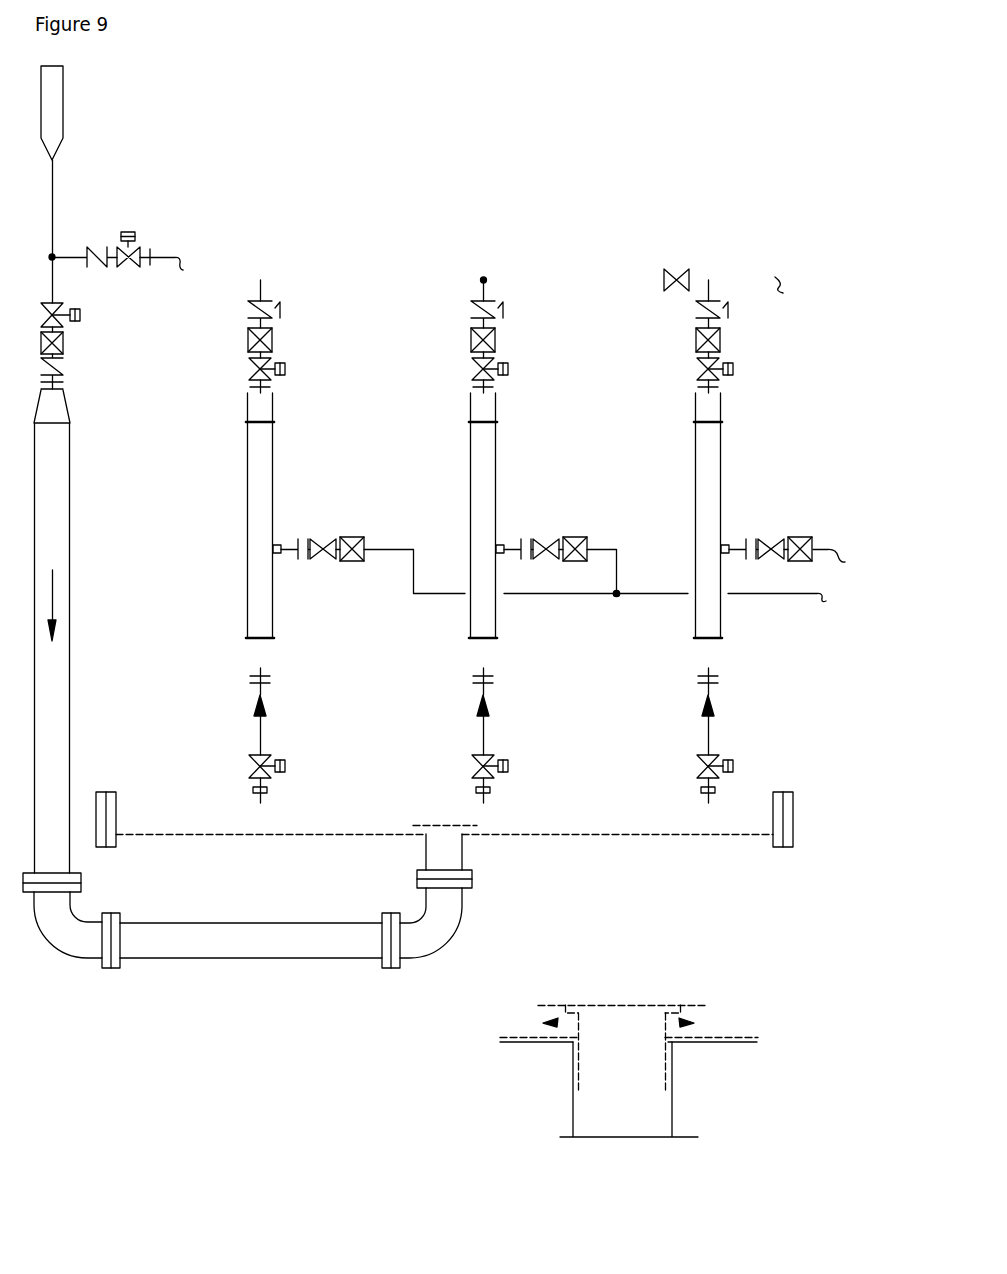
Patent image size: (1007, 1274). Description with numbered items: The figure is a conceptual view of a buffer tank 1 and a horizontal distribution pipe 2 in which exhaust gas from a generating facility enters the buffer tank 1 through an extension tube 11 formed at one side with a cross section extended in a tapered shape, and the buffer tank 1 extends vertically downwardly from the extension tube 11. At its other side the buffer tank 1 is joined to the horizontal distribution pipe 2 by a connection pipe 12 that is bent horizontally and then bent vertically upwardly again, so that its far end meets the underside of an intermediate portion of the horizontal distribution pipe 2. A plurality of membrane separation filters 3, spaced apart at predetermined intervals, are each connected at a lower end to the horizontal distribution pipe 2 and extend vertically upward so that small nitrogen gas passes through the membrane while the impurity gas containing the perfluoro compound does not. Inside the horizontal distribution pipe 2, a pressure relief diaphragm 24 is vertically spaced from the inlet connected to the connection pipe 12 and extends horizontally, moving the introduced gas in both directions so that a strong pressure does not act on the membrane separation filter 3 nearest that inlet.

The buffer tank 1 is at (65, 520).
The extension tube 11 is at (59, 411).
The connection pipe 12 is at (327, 946).
The horizontal distribution pipe 2 is at (350, 803).
The membrane separation filter 3 is at (487, 609).
The pressure relief diaphragm 24 is at (638, 1007).